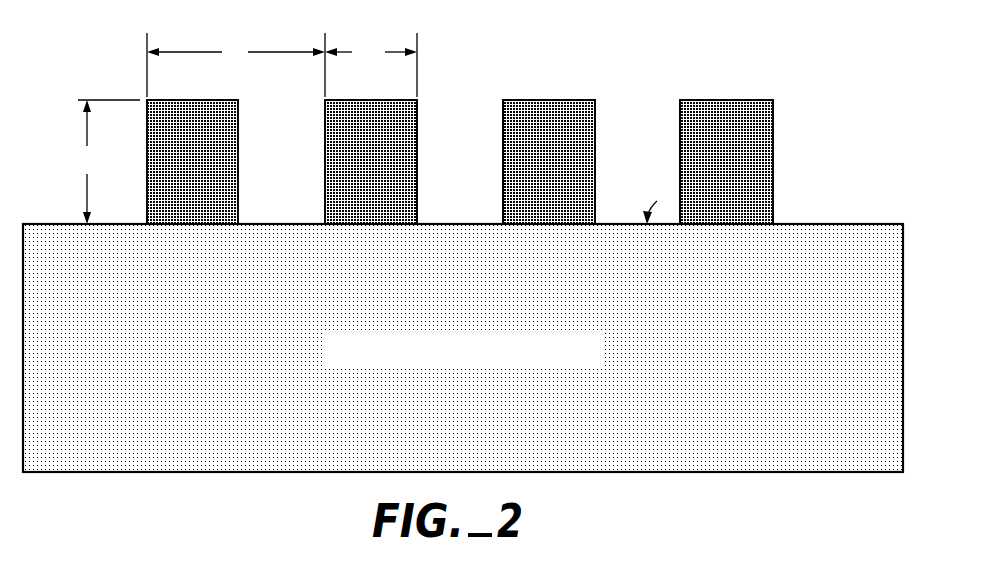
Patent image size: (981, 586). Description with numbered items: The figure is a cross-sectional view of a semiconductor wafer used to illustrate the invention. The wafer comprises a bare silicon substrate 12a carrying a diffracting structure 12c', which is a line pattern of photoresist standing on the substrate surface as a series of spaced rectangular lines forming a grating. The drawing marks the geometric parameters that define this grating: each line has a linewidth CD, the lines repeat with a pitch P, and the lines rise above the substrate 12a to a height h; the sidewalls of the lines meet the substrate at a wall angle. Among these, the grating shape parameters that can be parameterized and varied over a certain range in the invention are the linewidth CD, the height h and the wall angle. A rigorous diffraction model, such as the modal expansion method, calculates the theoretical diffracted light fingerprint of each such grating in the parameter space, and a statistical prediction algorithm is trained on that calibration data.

The silicon substrate 12a is at (804, 224).
The diffracting structure 12c' is at (535, 153).
The height h is at (109, 162).
The pitch P is at (236, 65).
The linewidth CD is at (371, 65).